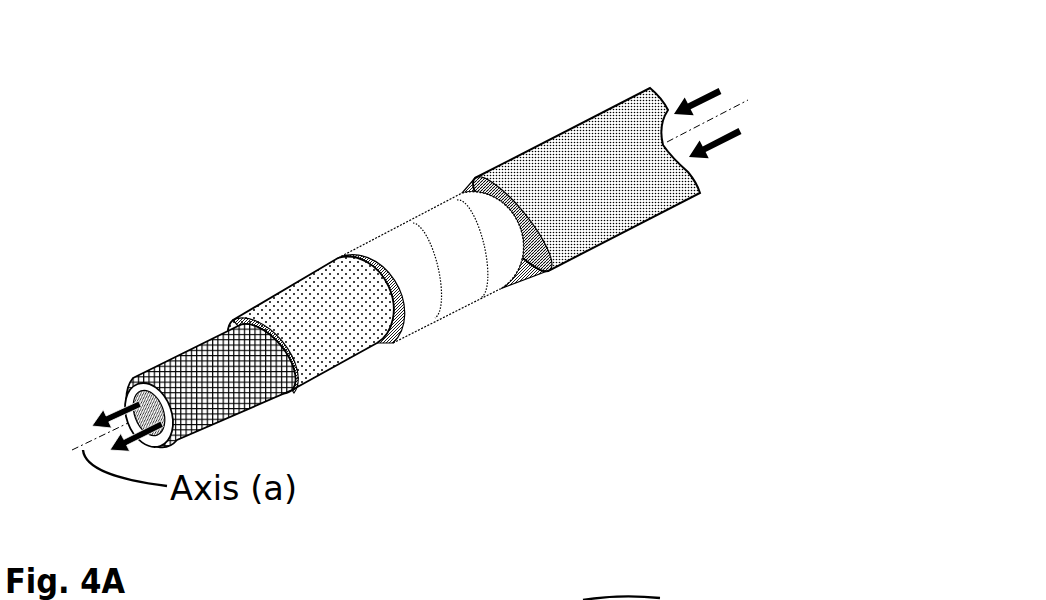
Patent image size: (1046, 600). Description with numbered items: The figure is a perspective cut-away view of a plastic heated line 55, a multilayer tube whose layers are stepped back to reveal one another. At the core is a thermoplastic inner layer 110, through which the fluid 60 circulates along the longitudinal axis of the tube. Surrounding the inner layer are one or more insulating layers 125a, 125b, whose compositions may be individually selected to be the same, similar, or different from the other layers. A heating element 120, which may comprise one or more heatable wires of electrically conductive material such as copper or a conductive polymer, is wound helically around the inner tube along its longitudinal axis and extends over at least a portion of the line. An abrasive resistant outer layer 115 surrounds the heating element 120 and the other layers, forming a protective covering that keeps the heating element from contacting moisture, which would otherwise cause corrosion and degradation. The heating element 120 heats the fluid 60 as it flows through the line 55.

The plastic heated line 55 is at (609, 289).
The fluid 60 is at (746, 46).
The thermoplastic inner layer 110 is at (207, 367).
The abrasive resistant outer layer 115 is at (577, 150).
The heating element 120 is at (483, 268).
The insulating layer 125a is at (443, 225).
The insulating layer 125b is at (318, 278).